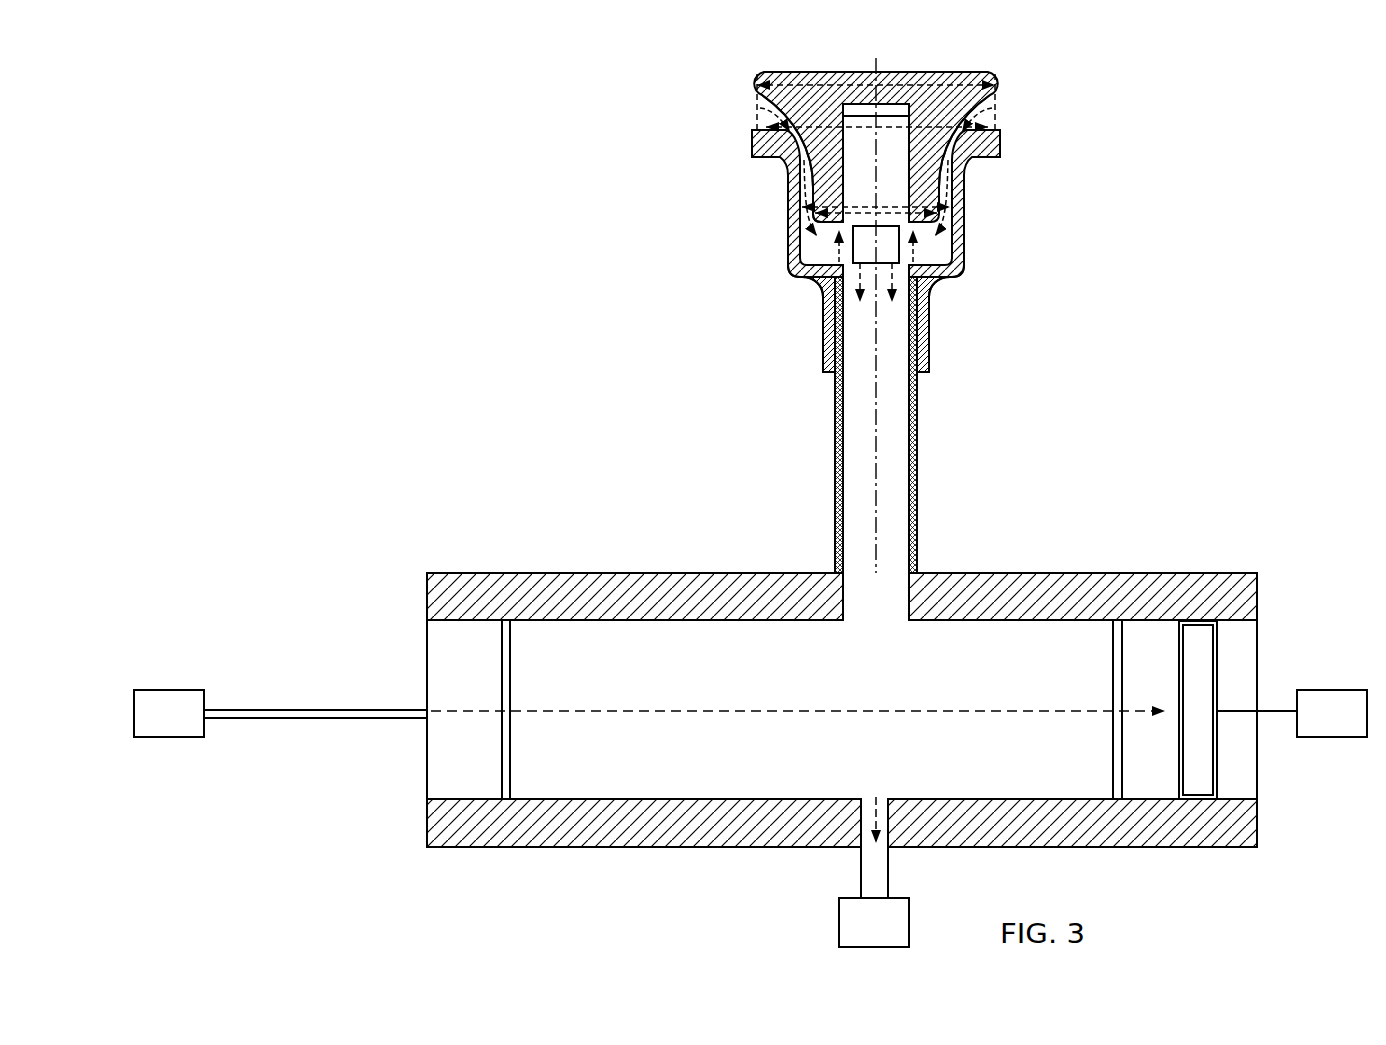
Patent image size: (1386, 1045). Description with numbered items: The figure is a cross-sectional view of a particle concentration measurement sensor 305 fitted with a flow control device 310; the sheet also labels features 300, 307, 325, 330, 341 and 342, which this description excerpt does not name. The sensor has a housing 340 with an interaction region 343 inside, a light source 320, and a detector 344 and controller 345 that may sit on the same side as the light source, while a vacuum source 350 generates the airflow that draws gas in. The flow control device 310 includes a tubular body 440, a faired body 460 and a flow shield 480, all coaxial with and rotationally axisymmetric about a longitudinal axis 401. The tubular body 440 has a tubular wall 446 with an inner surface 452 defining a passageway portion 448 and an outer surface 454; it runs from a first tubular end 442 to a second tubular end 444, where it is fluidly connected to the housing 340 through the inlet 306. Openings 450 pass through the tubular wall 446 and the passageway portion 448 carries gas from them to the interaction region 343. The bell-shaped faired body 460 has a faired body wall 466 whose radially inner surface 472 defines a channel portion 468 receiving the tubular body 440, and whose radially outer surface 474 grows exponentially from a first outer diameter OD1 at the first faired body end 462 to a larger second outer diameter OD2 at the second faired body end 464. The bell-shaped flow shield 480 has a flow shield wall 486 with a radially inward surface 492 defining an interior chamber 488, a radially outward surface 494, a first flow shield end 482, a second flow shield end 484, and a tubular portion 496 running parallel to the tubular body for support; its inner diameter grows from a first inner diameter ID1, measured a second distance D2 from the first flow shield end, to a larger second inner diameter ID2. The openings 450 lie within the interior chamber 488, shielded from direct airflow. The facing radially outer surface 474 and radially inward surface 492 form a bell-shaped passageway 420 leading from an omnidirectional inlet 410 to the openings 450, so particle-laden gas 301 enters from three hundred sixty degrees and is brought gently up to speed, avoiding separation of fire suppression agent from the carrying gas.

The fluid handling system 300 is at (351, 192).
The particle-laden gas 301 is at (792, 136).
The particle concentration measurement sensor 305 is at (431, 428).
The inlet 306 is at (834, 563).
The outlet port 307 is at (835, 863).
The flow control device 310 is at (600, 164).
The light source 320 is at (188, 727).
The flow direction 325 is at (947, 718).
The piston rod 330 is at (272, 709).
The housing 340 is at (1148, 571).
The first piston 341 is at (511, 662).
The second piston 342 is at (1112, 668).
The interaction region 343 is at (828, 702).
The detector 344 is at (1200, 678).
The controller 345 is at (1350, 727).
The vacuum source 350 is at (892, 937).
The longitudinal axis 401 is at (868, 402).
The inlet 410 is at (1004, 103).
The passageway 420 is at (949, 167).
The tubular body 440 is at (917, 520).
The first tubular end 442 is at (840, 165).
The second tubular end 444 is at (916, 572).
The tubular wall 446 is at (839, 460).
The passageway portion 448 is at (860, 532).
The openings 450 is at (944, 257).
The inner surface 452 is at (909, 340).
The outer surface 454 is at (916, 462).
The faired body 460 is at (795, 190).
The first faired body end 462 is at (964, 229).
The second faired body end 464 is at (987, 73).
The faired body wall 466 is at (834, 114).
The channel portion 468 is at (884, 108).
The radially inner surface 472 is at (818, 190).
The radially outer surface 474 is at (801, 137).
The flow shield 480 is at (812, 283).
The first flow shield end 482 is at (948, 279).
The second flow shield end 484 is at (968, 126).
The flow shield wall 486 is at (797, 262).
The interior chamber 488 is at (963, 262).
The radially inward surface 492 is at (964, 197).
The radially outward surface 494 is at (964, 218).
The tubular portion 496 is at (929, 366).
The first outer diameter OD1 is at (832, 238).
The second outer diameter OD2 is at (755, 84).
The first inner diameter ID1 is at (902, 205).
The second inner diameter ID2 is at (806, 128).
The second distance D2 is at (914, 273).